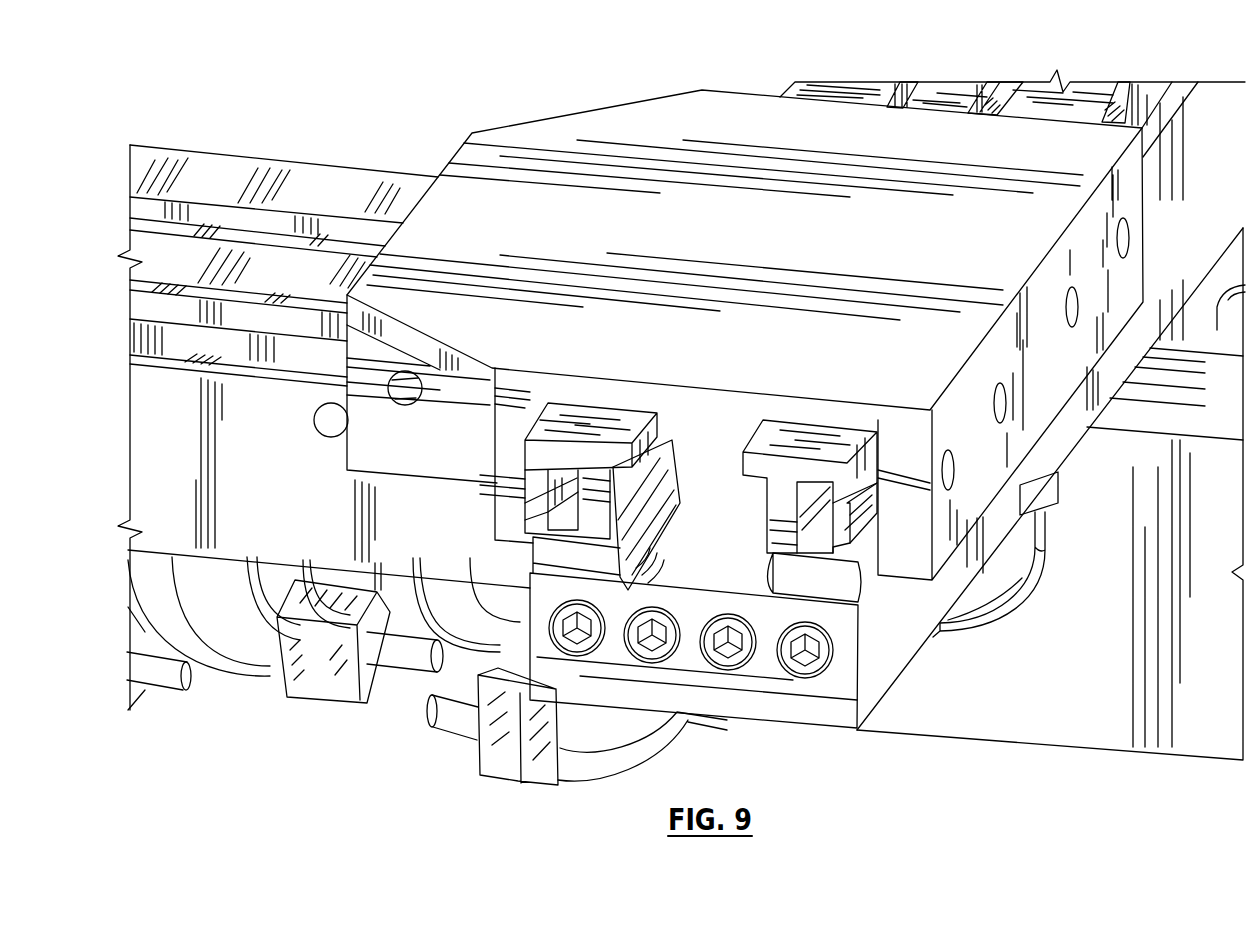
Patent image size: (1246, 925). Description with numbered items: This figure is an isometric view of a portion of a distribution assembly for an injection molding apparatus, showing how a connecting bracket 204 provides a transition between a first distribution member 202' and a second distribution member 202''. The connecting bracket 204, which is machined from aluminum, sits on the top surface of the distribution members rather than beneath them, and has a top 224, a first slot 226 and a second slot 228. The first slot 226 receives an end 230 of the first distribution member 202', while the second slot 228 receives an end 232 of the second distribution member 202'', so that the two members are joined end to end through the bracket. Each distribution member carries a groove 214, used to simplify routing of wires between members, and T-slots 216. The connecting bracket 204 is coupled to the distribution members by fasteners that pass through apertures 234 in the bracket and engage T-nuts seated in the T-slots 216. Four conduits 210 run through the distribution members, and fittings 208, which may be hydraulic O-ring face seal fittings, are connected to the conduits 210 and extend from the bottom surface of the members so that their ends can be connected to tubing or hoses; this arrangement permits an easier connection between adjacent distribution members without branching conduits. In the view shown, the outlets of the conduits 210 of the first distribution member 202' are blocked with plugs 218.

The first distribution member 202' is at (1050, 421).
The second distribution member 202'' is at (324, 427).
The connecting bracket 204 is at (465, 143).
The fitting 208 is at (627, 752).
The conduit 210 is at (827, 677).
The groove 214 is at (732, 574).
The T-slot 216 is at (522, 507).
The plug 218 is at (795, 660).
The top 224 is at (468, 373).
The first slot 226 is at (725, 442).
The second slot 228 is at (318, 412).
The end of first distribution member 230 is at (870, 550).
The end of second distribution member 232 is at (330, 350).
The aperture 234 is at (1005, 407).